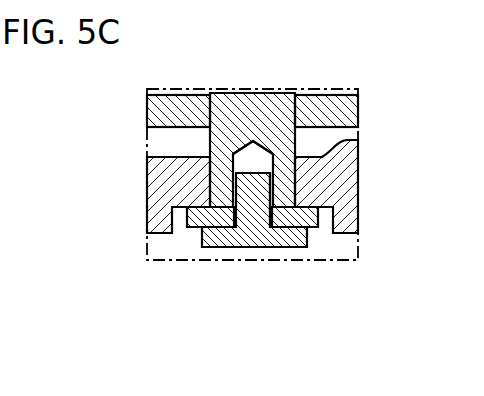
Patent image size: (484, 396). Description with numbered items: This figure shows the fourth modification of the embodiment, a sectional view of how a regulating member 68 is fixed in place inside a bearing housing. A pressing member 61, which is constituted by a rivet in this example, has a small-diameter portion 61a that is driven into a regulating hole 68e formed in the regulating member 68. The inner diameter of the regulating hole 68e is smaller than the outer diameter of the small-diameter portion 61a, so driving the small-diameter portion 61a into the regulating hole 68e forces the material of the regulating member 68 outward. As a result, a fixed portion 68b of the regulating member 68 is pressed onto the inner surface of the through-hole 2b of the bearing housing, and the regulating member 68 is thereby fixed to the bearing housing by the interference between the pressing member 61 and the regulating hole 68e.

The through-hole 2b is at (224, 182).
The regulating member 68 is at (242, 188).
The fixed portion 68b is at (208, 184).
The regulating hole 68e is at (231, 176).
The pressing member 61 is at (252, 247).
The small-diameter portion 61a is at (273, 187).